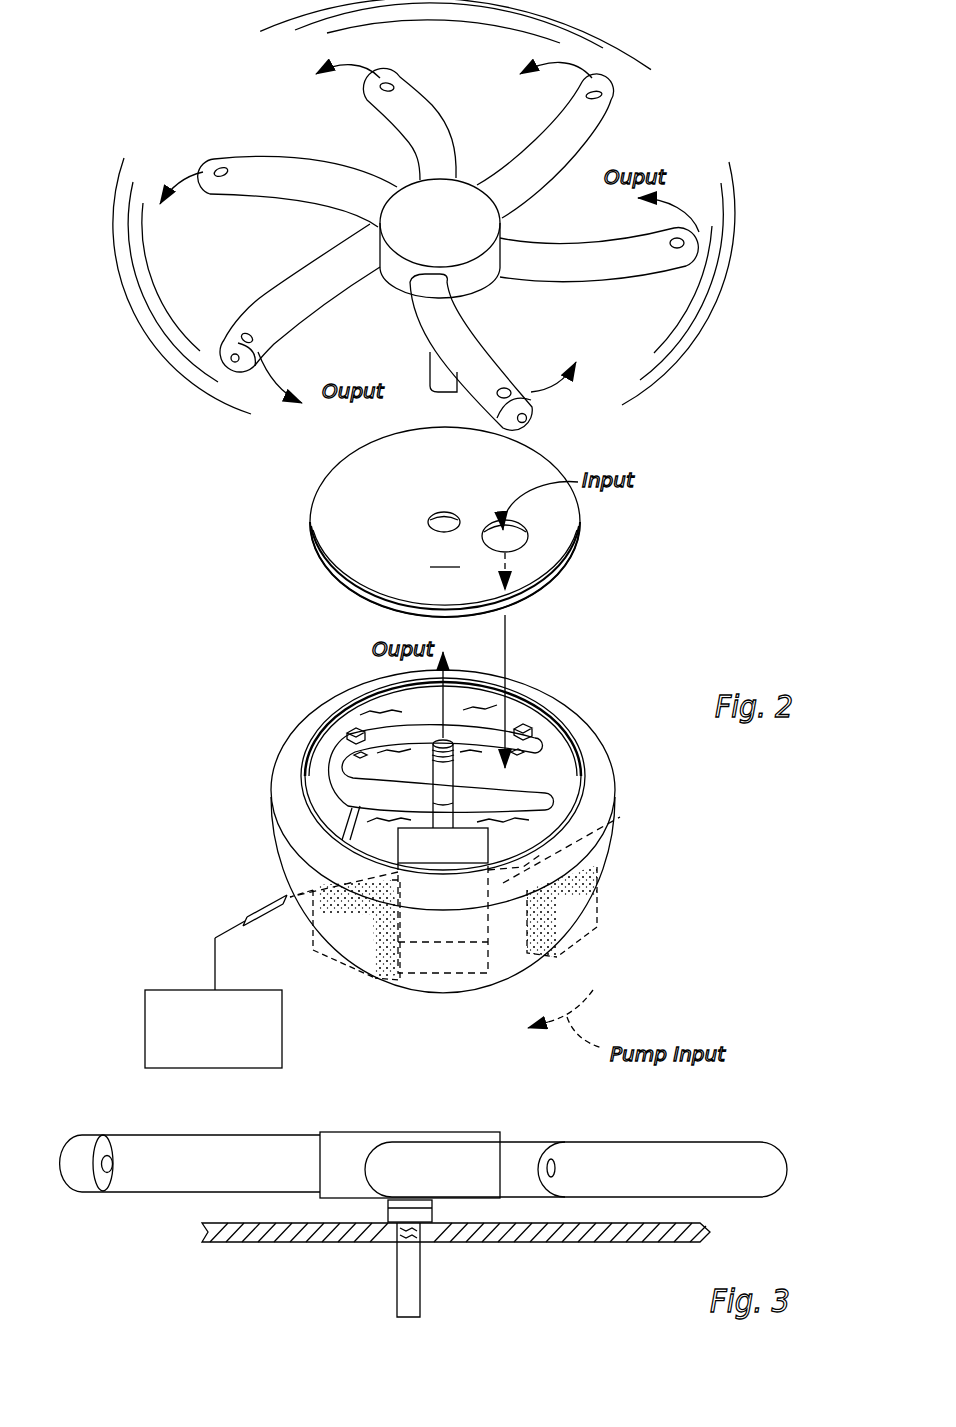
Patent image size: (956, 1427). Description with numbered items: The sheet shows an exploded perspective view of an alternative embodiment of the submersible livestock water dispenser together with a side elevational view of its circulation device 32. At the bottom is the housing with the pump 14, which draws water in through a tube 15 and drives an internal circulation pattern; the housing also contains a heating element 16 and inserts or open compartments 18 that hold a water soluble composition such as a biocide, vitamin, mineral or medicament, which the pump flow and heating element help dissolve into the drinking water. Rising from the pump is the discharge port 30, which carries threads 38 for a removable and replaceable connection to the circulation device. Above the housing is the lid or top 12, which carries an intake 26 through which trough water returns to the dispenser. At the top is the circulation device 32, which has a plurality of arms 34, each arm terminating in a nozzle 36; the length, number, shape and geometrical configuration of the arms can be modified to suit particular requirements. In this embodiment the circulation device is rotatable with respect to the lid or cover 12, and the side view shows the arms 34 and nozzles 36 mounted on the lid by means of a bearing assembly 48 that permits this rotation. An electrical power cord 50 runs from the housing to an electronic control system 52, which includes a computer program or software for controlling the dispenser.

In FIG. 2, the lid or top 12 is at (350, 494).
In FIG. 3, the lid or top 12 is at (622, 1238).
In FIG. 2, the pump 14 is at (457, 862).
In FIG. 2, the tube 15 is at (620, 817).
In FIG. 2, the heating element 16 is at (540, 746).
In FIG. 2, the insert or open compartment 18 is at (582, 920).
In FIG. 2, the intake 26 is at (518, 540).
In FIG. 2, the discharge port 30 is at (436, 742).
In FIG. 2, the circulation device 32 is at (440, 285).
In FIG. 3, the circulation device 32 is at (712, 1114).
In FIG. 2, the arms 34 is at (427, 103).
In FIG. 3, the arms 34 is at (190, 1177).
In FIG. 2, the nozzle 36 is at (602, 98).
In FIG. 3, the nozzle 36 is at (104, 1170).
In FIG. 2, the threads 38 is at (435, 762).
In FIG. 3, the bearing assembly 48 is at (392, 1208).
In FIG. 2, the electrical power cord 50 is at (267, 900).
In FIG. 2, the electronic control system 52 is at (165, 990).